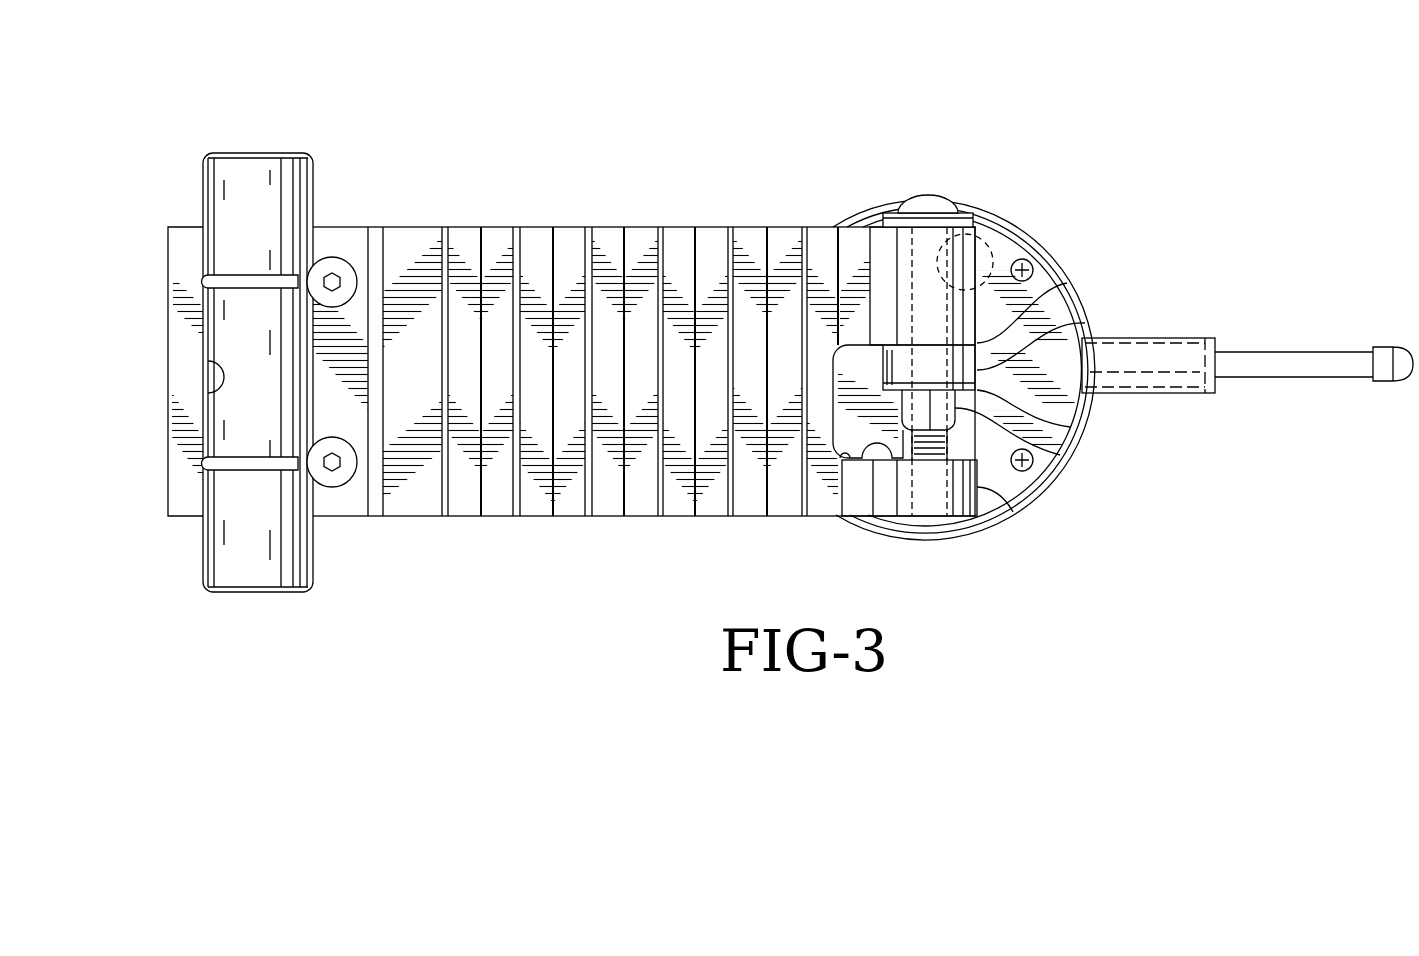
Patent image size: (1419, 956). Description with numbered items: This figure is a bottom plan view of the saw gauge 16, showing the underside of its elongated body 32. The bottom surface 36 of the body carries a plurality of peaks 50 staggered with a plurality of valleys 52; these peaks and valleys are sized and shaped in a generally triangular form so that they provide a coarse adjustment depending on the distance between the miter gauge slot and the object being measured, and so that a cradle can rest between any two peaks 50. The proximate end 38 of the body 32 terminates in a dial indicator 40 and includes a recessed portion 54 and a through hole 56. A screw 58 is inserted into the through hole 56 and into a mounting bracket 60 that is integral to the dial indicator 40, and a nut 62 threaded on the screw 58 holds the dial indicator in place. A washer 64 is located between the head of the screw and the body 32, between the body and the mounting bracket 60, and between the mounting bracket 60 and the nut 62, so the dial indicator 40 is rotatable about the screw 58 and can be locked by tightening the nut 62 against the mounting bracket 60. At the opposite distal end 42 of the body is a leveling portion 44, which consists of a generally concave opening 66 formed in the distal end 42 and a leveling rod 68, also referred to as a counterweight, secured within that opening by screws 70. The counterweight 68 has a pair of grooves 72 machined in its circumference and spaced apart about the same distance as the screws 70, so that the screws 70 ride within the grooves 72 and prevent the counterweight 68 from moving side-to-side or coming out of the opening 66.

The saw gauge 16 is at (812, 108).
The body 32 is at (424, 524).
The bottom surface 36 is at (408, 252).
The proximate end 38 is at (980, 486).
The dial indicator 40 is at (1072, 252).
The distal end 42 is at (170, 333).
The leveling portion 44 is at (245, 160).
The peaks 50 is at (481, 503).
The valleys 52 is at (445, 228).
The recessed portion 54 is at (897, 452).
The through hole 56 is at (993, 242).
The screw 58 is at (922, 198).
The mounting bracket 60 is at (1085, 323).
The nut 62 is at (1060, 455).
The washer 64 is at (937, 197).
The generally concave opening 66 is at (213, 383).
The leveling rod 68 is at (252, 566).
The screws 70 is at (340, 268).
The grooves 72 is at (245, 280).